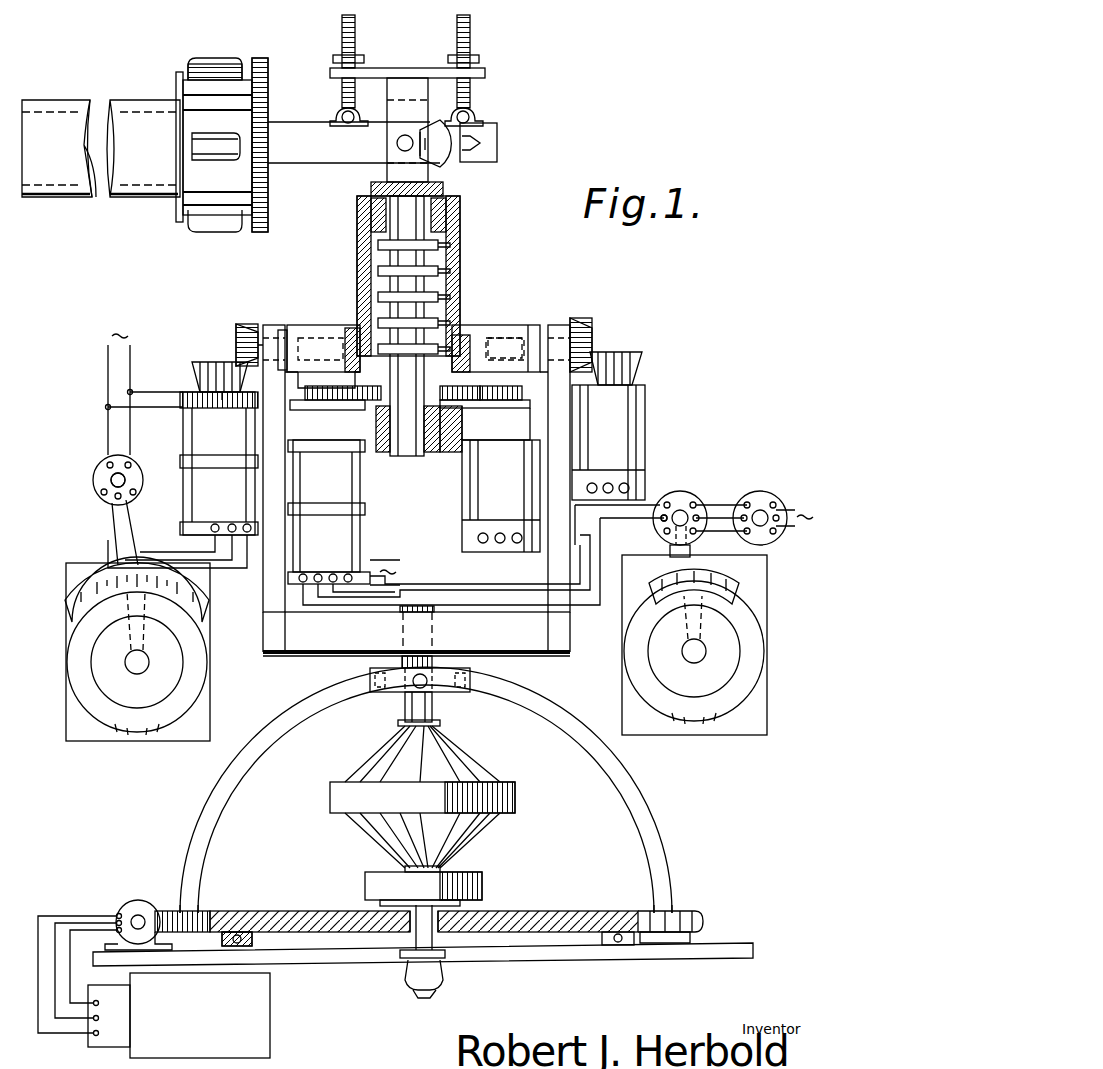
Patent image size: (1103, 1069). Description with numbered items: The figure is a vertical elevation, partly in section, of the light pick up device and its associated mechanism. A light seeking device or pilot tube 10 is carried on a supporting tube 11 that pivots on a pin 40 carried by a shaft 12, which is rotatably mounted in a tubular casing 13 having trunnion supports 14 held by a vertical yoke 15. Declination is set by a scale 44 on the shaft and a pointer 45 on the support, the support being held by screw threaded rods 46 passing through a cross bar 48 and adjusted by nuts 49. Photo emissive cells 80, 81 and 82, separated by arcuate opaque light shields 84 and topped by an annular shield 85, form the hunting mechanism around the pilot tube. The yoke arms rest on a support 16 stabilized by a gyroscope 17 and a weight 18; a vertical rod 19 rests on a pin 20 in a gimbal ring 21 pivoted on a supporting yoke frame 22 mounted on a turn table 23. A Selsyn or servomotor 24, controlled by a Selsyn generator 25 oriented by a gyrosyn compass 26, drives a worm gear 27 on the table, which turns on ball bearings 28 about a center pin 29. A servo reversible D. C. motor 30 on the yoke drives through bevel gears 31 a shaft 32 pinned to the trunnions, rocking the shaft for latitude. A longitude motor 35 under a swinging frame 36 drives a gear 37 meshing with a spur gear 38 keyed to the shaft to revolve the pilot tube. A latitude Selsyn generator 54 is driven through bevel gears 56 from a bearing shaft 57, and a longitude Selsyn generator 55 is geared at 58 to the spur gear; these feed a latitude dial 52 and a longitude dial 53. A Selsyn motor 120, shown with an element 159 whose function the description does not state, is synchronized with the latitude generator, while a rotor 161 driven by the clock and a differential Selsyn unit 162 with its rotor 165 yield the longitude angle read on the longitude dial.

The light seeking device or pilot tube 10 is at (133, 103).
The supporting tube 11 is at (354, 142).
The shaft 12 is at (388, 174).
The tubular casing 13 is at (357, 240).
The trunnion supports 14 is at (318, 324).
The yoke 15 is at (276, 324).
The support 16 is at (416, 637).
The gyroscope 17 is at (422, 797).
The weight 18 is at (423, 886).
The vertical rod 19 is at (398, 722).
The pin 20 is at (405, 700).
The gimbal ring 21 is at (447, 694).
The supporting yoke frame 22 is at (245, 775).
The turn table 23 is at (290, 916).
The Selsyn or servomotor 24 is at (124, 910).
The Selsyn generator 25 is at (104, 1047).
The gyrosyn compass 26 is at (200, 1015).
The worm gear 27 is at (172, 910).
The ball bearings 28 is at (252, 943).
The center pin 29 is at (385, 940).
The servo reversible D. C. motor 30 is at (608, 442).
The bevel gears 31 is at (598, 352).
The shaft 32 is at (500, 338).
The longitude motor 35 is at (501, 496).
The swinging frame 36 is at (453, 429).
The gear 37 is at (500, 386).
The spur gear 38 is at (462, 386).
The pin 40 is at (397, 141).
The scale 44 is at (435, 143).
The pointer 45 is at (497, 140).
The screw threaded rods 46 is at (342, 102).
The cross bar 48 is at (380, 68).
The nuts 49 is at (356, 58).
The latitude dial 52 is at (137, 649).
The longitude dial 53 is at (694, 645).
The latitude Selsyn generator 54 is at (219, 463).
The longitude Selsyn generator 55 is at (329, 512).
The bevel gears 56 is at (236, 346).
The bearing shaft 57 is at (284, 328).
The gearing 58 is at (322, 388).
The photo emissive cell 80 is at (210, 58).
The photo emissive cell 81 is at (220, 158).
The photo emissive cell 82 is at (218, 232).
The arcuate opaque light shields 84 is at (268, 202).
The annular shield 85 is at (176, 206).
The Selsyn motor 120 is at (106, 466).
The selsyn shaft 159 is at (110, 473).
The rotor 161 is at (765, 532).
The differential Selsyn unit 162 is at (677, 494).
The rotor 165 is at (660, 515).